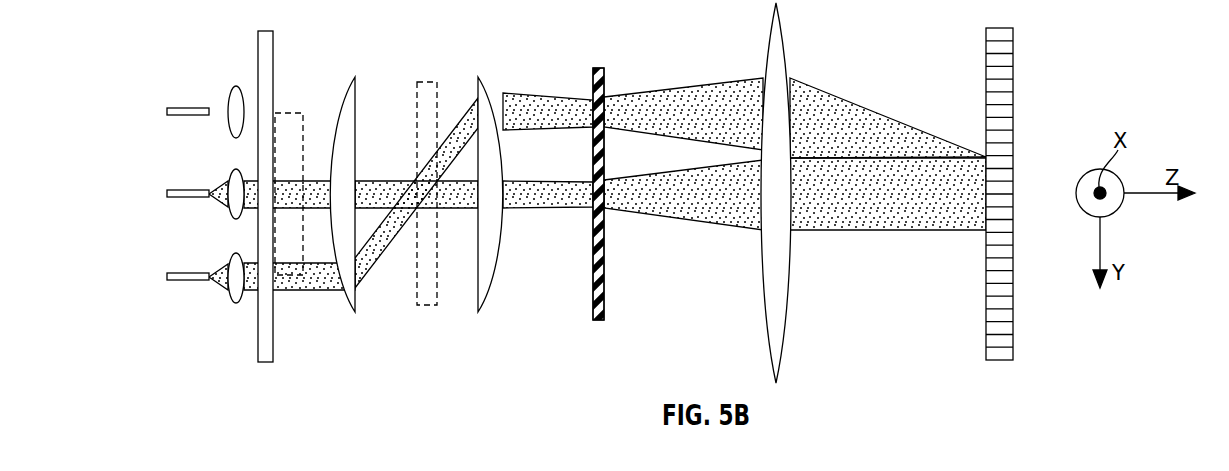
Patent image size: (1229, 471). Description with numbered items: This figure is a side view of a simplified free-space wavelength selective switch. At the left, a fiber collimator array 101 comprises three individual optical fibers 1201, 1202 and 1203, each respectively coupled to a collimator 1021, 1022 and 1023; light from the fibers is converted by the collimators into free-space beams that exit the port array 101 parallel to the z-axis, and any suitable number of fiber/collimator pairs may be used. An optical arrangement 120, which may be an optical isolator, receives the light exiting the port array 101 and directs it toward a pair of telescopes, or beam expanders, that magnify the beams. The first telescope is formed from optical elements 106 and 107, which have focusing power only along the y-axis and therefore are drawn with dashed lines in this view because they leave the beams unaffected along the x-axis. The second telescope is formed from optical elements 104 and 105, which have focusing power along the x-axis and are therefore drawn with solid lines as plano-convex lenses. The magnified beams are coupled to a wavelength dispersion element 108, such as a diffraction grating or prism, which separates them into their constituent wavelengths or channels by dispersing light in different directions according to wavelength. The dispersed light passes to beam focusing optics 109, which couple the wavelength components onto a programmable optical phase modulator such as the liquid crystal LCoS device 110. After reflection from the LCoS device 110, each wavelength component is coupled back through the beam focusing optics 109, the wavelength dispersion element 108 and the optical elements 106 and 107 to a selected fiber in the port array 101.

The fiber collimator array 101 is at (161, 200).
The optical fiber 1201 is at (167, 112).
The optical fiber 1202 is at (167, 194).
The optical fiber 1203 is at (167, 277).
The collimator 1021 is at (235, 86).
The collimator 1022 is at (236, 170).
The collimator 1023 is at (245, 306).
The optical arrangement 120 is at (267, 31).
The optical element 104 is at (353, 77).
The optical element 105 is at (478, 77).
The optical element 106 is at (280, 113).
The optical element 107 is at (428, 82).
The wavelength dispersion element 108 is at (597, 68).
The beam focusing optics 109 is at (768, 43).
The LCoS device 110 is at (998, 28).